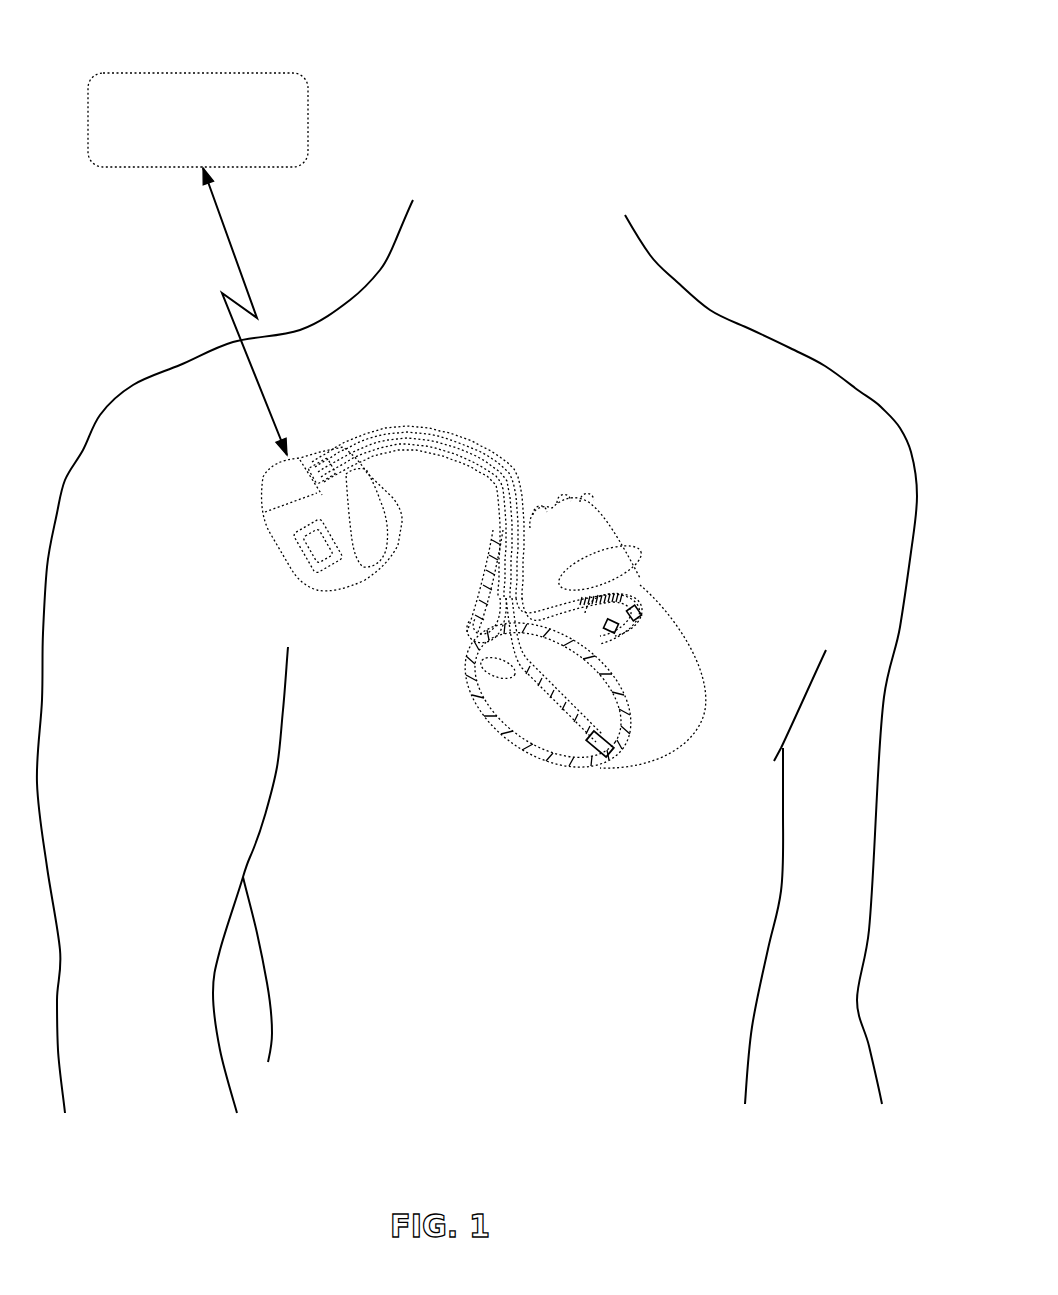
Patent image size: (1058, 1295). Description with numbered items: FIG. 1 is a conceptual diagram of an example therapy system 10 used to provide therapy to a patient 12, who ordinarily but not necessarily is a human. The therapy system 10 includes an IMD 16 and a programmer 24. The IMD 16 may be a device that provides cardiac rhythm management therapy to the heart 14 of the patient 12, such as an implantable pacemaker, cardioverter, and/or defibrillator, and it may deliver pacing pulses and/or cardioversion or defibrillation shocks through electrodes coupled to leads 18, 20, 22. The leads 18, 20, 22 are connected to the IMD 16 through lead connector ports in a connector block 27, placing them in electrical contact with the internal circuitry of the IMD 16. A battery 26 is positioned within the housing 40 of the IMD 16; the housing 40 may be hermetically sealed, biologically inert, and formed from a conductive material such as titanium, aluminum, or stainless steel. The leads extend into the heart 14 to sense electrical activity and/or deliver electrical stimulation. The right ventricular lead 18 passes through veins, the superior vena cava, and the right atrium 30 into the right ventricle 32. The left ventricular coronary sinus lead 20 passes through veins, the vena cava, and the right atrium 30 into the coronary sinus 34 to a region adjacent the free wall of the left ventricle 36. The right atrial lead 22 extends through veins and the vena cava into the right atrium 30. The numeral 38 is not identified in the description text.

The therapy system 10 is at (708, 82).
The patient 12 is at (752, 327).
The heart 14 is at (568, 671).
The IMD 16 is at (299, 538).
The right ventricular lead 18 is at (470, 445).
The left ventricular coronary sinus lead 20 is at (515, 473).
The right atrial lead 22 is at (492, 490).
The programmer 24 is at (198, 264).
The battery 26 is at (306, 562).
The connector block 27 is at (268, 492).
The right atrium 30 is at (485, 645).
The right ventricle 32 is at (533, 718).
The coronary sinus 34 is at (548, 607).
The left ventricle 36 is at (667, 665).
The left atrium 38 is at (593, 547).
The housing 40 is at (360, 562).